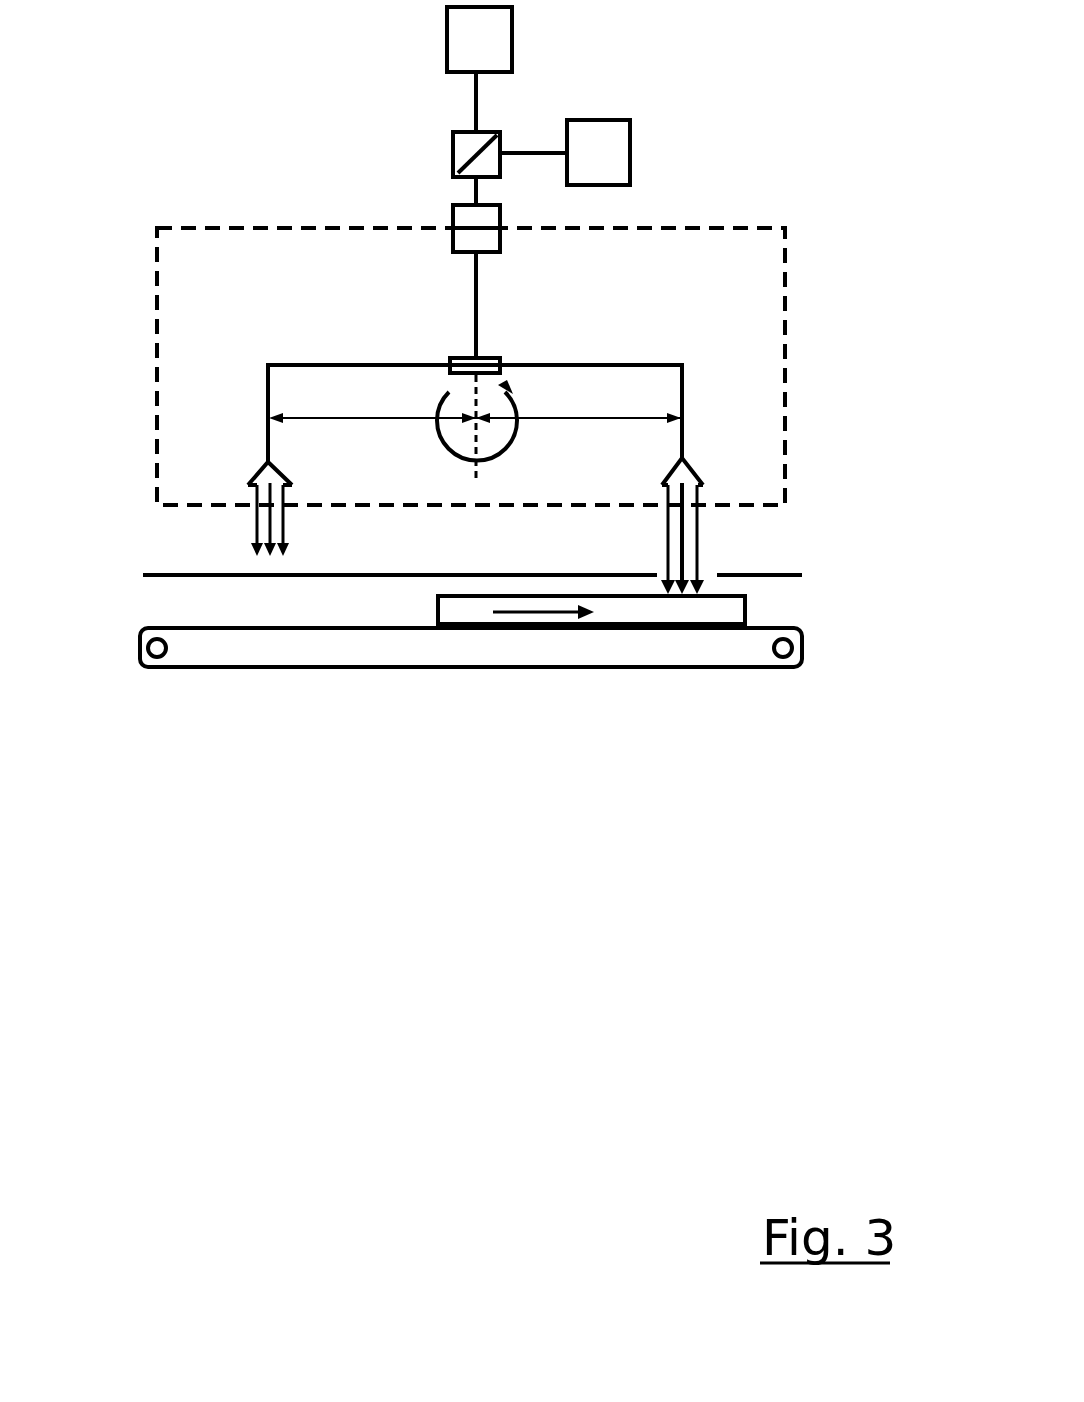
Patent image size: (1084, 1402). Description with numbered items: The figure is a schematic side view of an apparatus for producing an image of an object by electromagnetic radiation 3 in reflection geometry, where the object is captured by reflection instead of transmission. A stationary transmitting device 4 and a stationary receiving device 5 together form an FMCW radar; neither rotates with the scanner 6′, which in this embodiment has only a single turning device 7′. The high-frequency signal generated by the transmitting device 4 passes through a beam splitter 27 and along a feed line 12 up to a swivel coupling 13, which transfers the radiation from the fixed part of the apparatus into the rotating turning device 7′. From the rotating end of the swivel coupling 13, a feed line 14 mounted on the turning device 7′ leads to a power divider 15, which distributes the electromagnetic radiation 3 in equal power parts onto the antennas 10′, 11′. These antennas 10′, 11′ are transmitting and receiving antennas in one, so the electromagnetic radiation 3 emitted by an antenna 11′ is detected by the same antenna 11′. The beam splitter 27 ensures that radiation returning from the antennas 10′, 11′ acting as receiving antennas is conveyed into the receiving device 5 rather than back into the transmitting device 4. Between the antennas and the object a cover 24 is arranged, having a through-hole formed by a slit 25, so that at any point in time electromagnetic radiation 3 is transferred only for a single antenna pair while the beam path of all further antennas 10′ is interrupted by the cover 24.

The electromagnetic radiation 3 is at (700, 540).
The transmitting device 4 is at (497, 33).
The receiving device 5 is at (613, 145).
The scanner 6′ is at (852, 428).
The turning device 7′ is at (787, 385).
The antenna 10′ is at (257, 468).
The antenna 11′ is at (693, 467).
The feed line 12 is at (473, 182).
The swivel coupling 13 is at (500, 207).
The feed line 14 is at (480, 308).
The power divider 15 is at (452, 358).
The cover 24 is at (172, 578).
The slit 25 is at (714, 588).
The beam splitter 27 is at (455, 132).